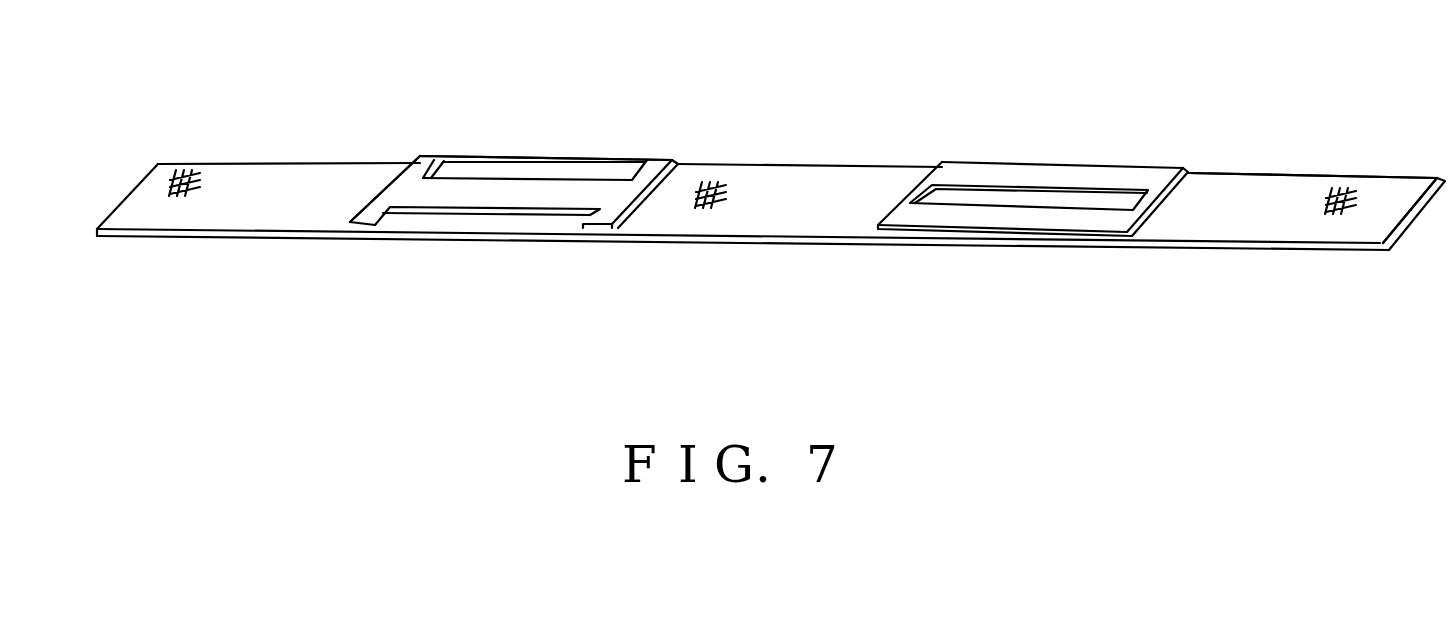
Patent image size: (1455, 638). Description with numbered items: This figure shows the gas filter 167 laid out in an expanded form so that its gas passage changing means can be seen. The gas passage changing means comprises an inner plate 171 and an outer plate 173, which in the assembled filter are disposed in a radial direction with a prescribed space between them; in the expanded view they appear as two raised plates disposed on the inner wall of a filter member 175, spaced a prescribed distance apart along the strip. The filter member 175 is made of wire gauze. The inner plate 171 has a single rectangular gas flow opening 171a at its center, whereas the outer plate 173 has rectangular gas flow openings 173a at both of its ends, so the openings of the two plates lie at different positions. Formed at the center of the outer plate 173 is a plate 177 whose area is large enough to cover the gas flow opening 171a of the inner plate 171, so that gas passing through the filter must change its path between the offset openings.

The gas filter 167 is at (773, 140).
The inner plate 171 is at (970, 172).
The gas flow opening 171a is at (1037, 197).
The outer plate 173 is at (428, 156).
The gas flow openings 173a is at (505, 175).
The filter member 175 is at (1188, 226).
The plate 177 is at (561, 192).